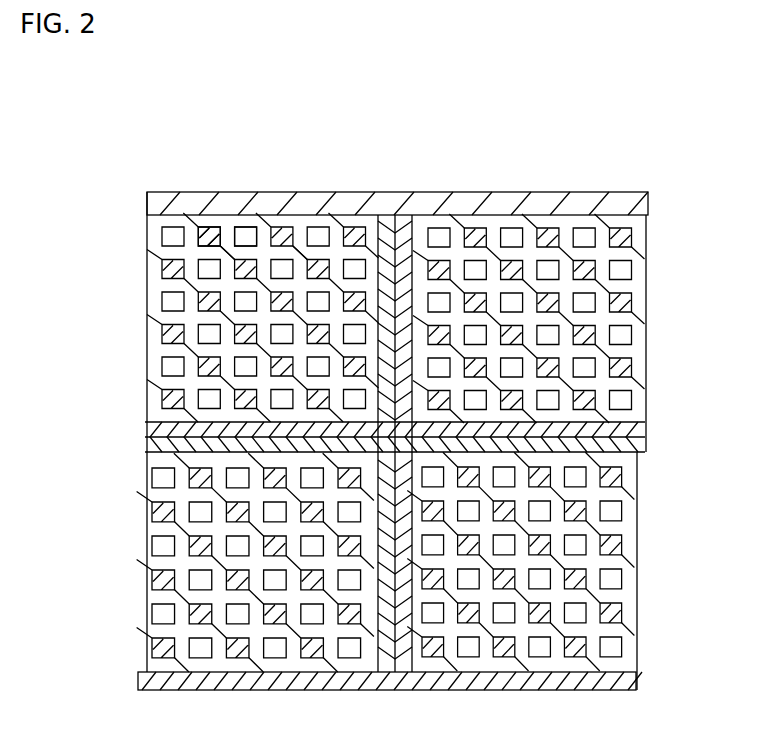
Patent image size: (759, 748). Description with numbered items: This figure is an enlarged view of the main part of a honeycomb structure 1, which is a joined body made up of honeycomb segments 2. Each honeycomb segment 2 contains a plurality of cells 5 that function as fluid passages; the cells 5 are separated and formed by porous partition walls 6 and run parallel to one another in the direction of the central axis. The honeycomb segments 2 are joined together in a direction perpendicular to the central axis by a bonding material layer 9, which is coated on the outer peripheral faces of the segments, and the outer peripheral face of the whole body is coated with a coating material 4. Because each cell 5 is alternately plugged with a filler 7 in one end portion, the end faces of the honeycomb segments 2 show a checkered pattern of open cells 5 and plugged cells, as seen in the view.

The honeycomb structure 1 is at (298, 140).
The honeycomb segment 2 is at (130, 290).
The coating material 4 is at (488, 200).
The cell 5 is at (250, 228).
The porous partition wall 6 is at (307, 223).
The filler 7 is at (213, 227).
The bonding material layer 9 is at (420, 213).